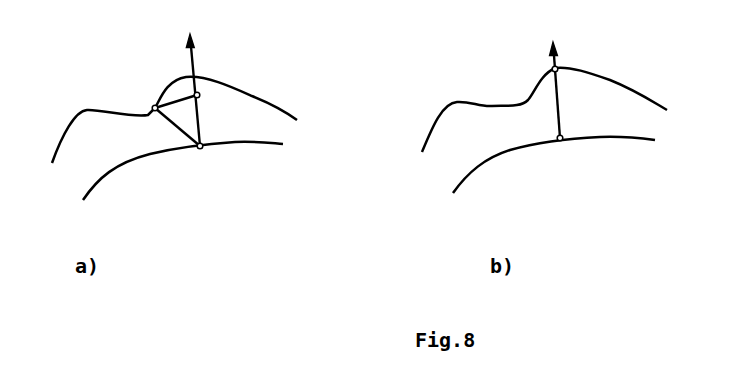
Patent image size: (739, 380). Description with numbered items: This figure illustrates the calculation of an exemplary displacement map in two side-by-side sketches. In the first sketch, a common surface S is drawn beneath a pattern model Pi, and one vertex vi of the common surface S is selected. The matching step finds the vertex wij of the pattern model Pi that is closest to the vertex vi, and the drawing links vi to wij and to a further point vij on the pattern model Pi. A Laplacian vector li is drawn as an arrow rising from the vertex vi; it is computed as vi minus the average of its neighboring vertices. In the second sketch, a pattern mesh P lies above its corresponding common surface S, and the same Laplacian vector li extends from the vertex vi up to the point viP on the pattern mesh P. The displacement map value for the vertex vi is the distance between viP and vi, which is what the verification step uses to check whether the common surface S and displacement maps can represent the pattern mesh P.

The pattern model Pi is at (163, 120).
The common surface S is at (364, 179).
The Laplacian vector li is at (379, 88).
The closest vertex of pattern model wij is at (162, 118).
The point v_ij on polyline P_i vij is at (206, 97).
The vertex of common surface vi is at (373, 152).
The pattern mesh P is at (539, 110).
The displaced point on pattern mesh viP is at (568, 83).